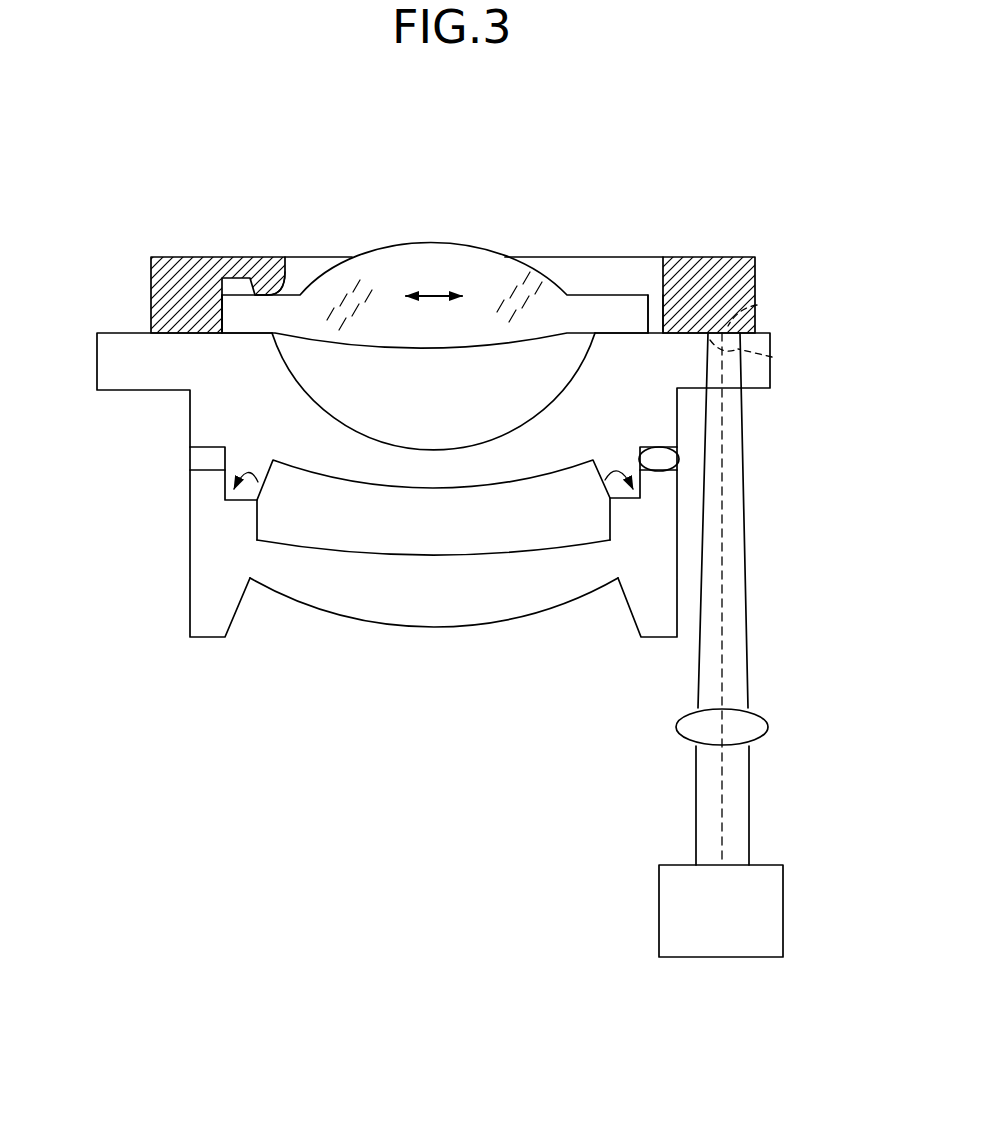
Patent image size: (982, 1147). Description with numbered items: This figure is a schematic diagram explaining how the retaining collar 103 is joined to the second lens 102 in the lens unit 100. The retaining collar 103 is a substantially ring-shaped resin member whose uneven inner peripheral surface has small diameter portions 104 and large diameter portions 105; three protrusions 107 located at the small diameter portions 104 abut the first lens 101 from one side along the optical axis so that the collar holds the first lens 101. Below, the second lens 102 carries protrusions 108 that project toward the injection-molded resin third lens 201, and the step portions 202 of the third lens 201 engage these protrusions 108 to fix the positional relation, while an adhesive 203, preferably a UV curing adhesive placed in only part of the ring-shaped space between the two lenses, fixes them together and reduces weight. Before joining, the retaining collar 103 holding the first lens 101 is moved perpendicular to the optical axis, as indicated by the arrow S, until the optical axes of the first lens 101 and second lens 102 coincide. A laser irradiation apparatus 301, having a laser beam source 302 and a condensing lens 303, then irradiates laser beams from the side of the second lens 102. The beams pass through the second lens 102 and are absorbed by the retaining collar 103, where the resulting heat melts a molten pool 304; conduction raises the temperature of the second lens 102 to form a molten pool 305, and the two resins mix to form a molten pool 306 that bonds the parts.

The lens unit 100 is at (540, 116).
The first lens 101 is at (483, 268).
The second lens 102 is at (105, 362).
The retaining collar 103 is at (147, 293).
The small diameter portion 104 is at (223, 298).
The large diameter portion 105 is at (655, 293).
The protrusion 107 is at (273, 257).
The protrusion 108 is at (245, 467).
The third lens 201 is at (205, 538).
The step portion 202 is at (262, 490).
The adhesive 203 is at (675, 463).
The laser irradiation apparatus 301 is at (783, 854).
The laser beam source 302 is at (773, 913).
The lens 303 is at (765, 715).
The molten pool 304 is at (757, 305).
The molten pool 305 is at (772, 357).
The molten pool 306 is at (724, 300).
The arrow S is at (433, 293).